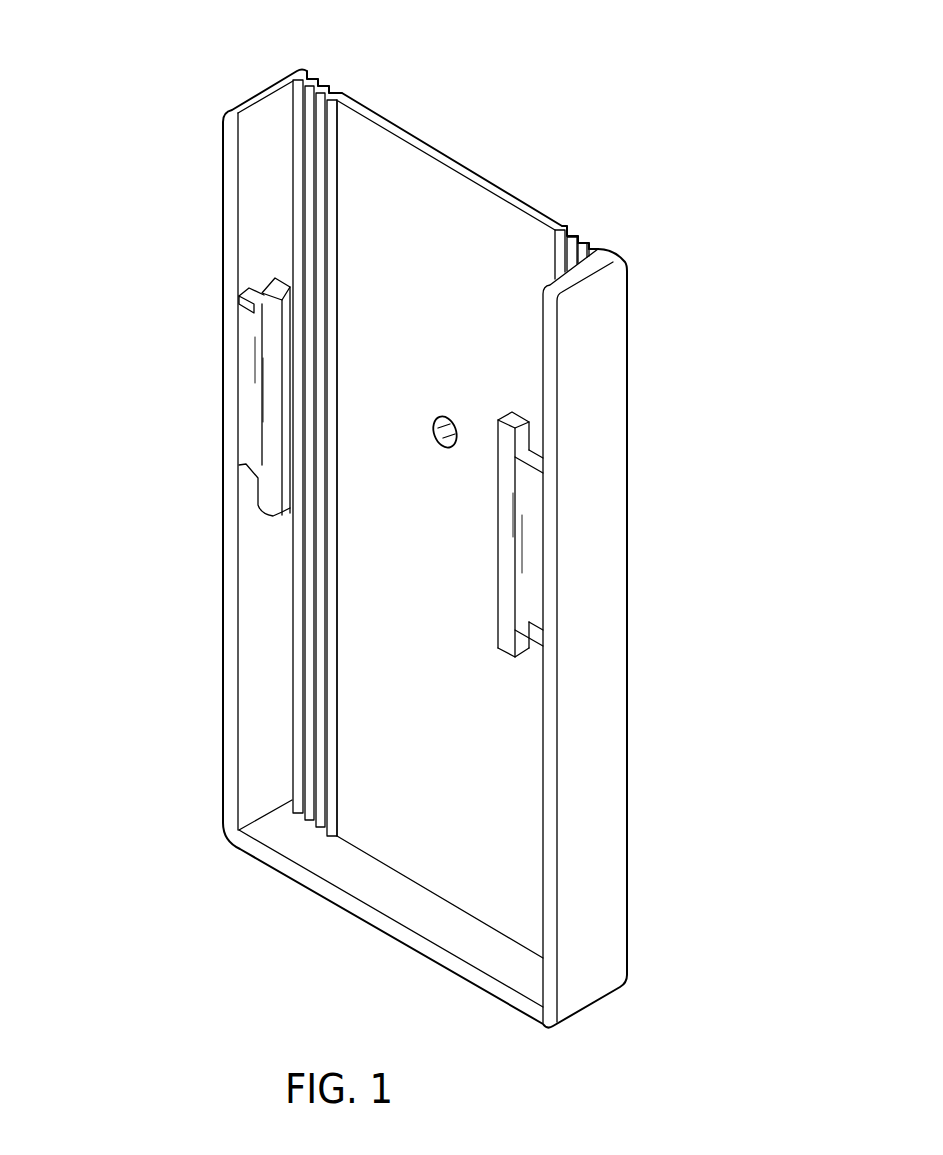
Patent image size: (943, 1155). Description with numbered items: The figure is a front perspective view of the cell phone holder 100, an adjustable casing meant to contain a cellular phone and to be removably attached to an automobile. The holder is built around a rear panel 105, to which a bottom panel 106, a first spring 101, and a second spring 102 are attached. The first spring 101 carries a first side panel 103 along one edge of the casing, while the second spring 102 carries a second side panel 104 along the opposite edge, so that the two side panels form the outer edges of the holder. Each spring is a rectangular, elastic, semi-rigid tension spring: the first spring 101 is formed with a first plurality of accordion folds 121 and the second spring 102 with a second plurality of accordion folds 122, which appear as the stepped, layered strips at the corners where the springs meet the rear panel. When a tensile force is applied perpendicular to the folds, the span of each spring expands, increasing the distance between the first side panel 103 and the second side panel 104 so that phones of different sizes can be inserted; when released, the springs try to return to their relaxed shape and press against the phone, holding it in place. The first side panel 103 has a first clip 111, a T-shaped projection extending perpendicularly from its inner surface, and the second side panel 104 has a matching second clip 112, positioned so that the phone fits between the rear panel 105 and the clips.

The cell phone holder 100 is at (714, 141).
The first spring 101 is at (313, 180).
The second spring 102 is at (570, 257).
The first side panel 103 is at (266, 92).
The second side panel 104 is at (598, 368).
The rear panel 105 is at (445, 222).
The bottom panel 106 is at (376, 920).
The first clip 111 is at (282, 385).
The second clip 112 is at (498, 543).
The first plurality of accordion folds 121 is at (323, 87).
The second plurality of accordion folds 122 is at (594, 243).